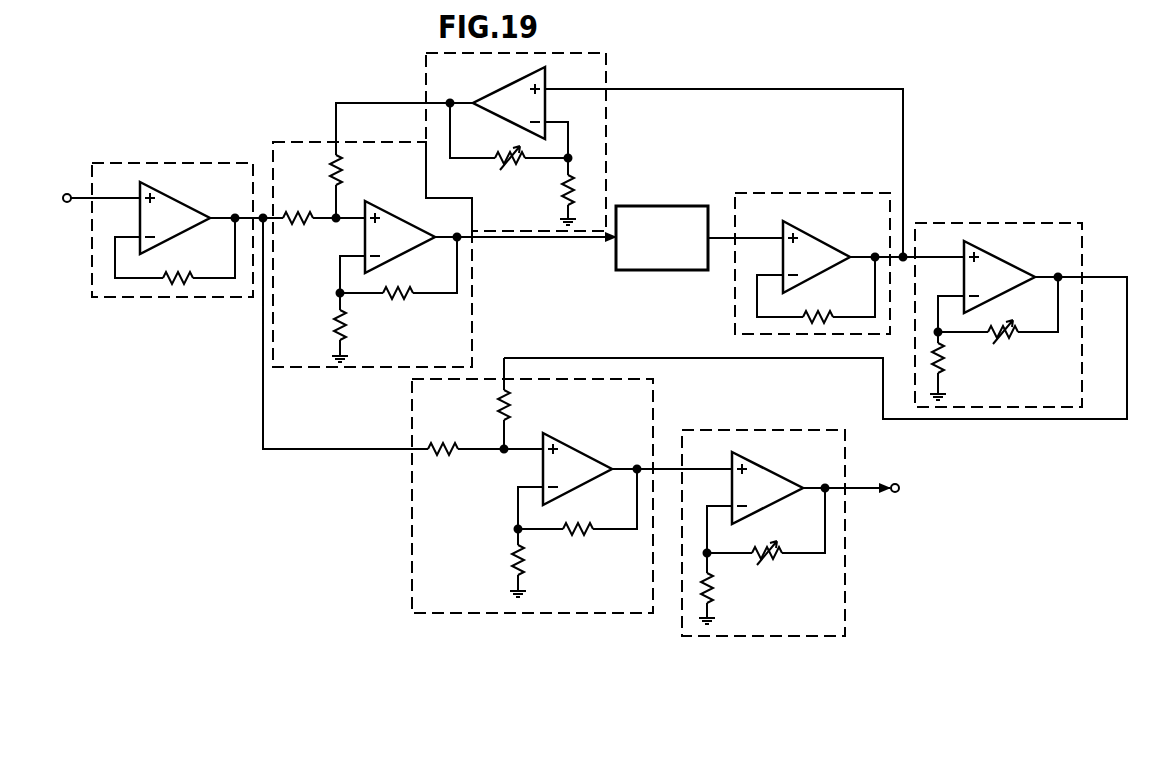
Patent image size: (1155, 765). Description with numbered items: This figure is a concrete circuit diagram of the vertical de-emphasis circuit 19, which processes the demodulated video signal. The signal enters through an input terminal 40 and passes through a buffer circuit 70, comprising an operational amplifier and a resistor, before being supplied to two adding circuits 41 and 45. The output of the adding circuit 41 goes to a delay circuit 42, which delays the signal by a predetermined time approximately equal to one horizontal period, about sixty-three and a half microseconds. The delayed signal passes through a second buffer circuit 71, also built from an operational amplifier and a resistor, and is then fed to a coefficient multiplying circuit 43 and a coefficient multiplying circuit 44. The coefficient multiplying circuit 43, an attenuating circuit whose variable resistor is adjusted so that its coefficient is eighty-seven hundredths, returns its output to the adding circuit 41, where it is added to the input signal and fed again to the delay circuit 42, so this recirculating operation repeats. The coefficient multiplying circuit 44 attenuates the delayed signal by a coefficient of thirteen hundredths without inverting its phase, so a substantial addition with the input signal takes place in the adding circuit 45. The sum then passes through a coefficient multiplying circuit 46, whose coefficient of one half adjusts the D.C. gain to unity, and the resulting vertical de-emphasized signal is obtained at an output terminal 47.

The vertical de-emphasis circuit 19 is at (718, 74).
The input terminal 40 is at (66, 194).
The adding circuit 41 is at (473, 268).
The delay circuit 42 is at (658, 270).
The coefficient multiplying circuit 43 is at (606, 108).
The coefficient multiplying circuit 44 is at (957, 221).
The adding circuit 45 is at (410, 484).
The coefficient multiplying circuit 46 is at (720, 427).
The output terminal 47 is at (896, 482).
The buffer circuit 70 is at (134, 162).
The buffer circuit 71 is at (778, 190).